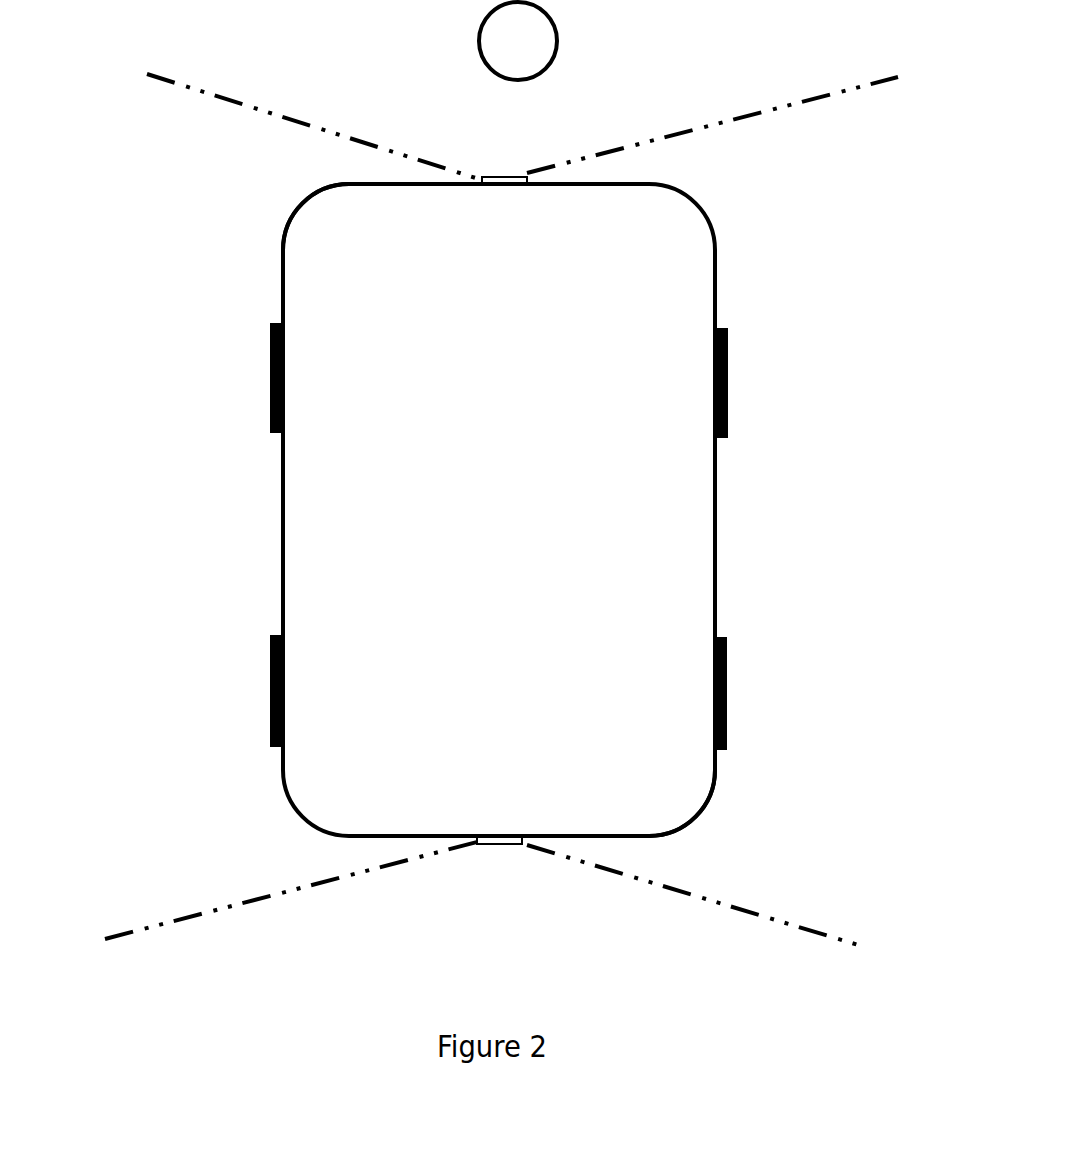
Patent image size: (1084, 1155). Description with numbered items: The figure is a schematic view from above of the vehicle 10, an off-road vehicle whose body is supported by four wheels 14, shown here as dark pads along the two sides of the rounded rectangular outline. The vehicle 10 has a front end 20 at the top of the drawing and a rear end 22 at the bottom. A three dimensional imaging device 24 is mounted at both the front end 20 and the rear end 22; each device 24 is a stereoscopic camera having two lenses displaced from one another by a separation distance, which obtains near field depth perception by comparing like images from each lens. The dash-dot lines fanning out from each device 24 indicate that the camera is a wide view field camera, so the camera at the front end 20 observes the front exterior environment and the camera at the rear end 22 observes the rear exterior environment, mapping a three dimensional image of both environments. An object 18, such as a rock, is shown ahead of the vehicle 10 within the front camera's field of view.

The vehicle 10 is at (703, 277).
The wheels 14 is at (270, 372).
The object 18 is at (483, 33).
The front end 20 is at (320, 219).
The rear end 22 is at (650, 810).
The three dimensional imaging device 24 is at (513, 175).